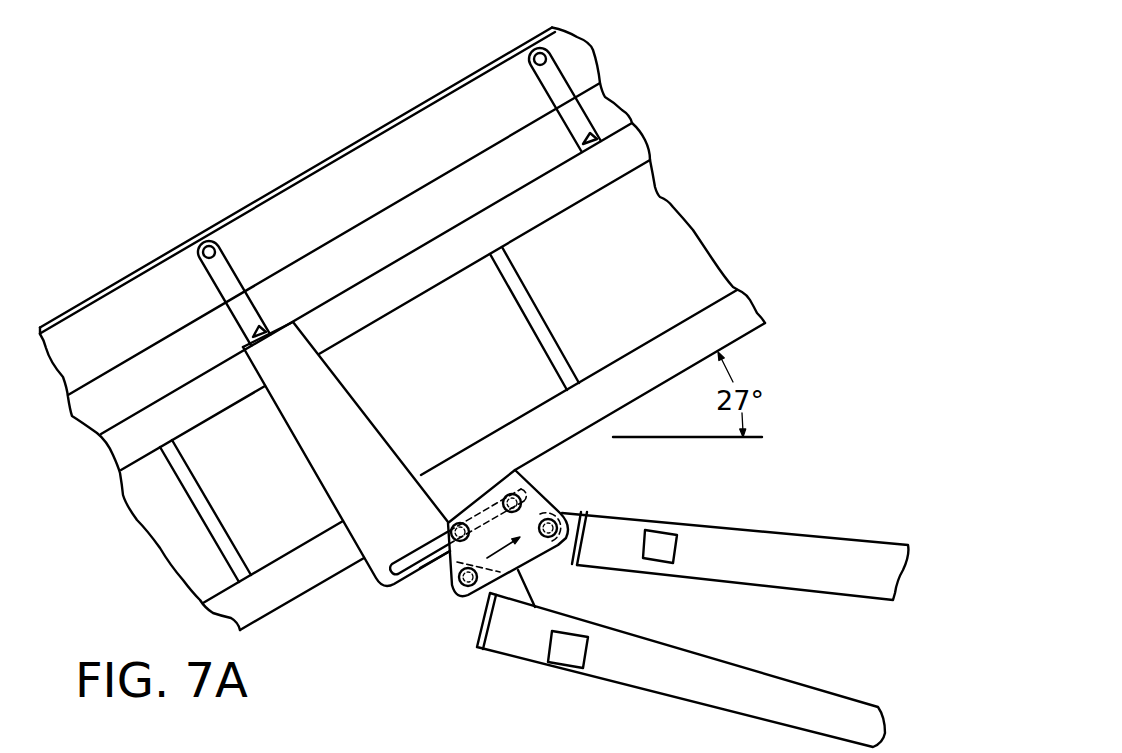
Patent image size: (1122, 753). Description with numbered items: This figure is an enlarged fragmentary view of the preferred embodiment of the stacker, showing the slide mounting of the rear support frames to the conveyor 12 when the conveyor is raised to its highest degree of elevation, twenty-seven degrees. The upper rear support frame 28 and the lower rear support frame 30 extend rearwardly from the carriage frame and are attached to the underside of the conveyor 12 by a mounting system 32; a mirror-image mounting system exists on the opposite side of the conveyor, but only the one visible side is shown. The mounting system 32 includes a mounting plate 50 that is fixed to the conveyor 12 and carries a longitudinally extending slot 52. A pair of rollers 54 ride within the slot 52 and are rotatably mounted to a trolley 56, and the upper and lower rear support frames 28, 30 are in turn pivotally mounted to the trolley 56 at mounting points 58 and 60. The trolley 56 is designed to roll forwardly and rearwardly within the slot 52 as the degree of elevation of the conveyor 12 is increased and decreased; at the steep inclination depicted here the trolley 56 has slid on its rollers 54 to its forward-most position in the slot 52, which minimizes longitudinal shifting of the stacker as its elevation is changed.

The conveyor 12 is at (320, 167).
The upper rear support frame 28 is at (808, 536).
The lower rear support frame 30 is at (789, 686).
The mounting system 32 is at (422, 610).
The mounting plate 50 is at (522, 481).
The slot 52 is at (401, 564).
The rollers 54 is at (459, 523).
The trolley 56 is at (450, 567).
The mounting point 58 is at (537, 540).
The mounting point 60 is at (457, 588).